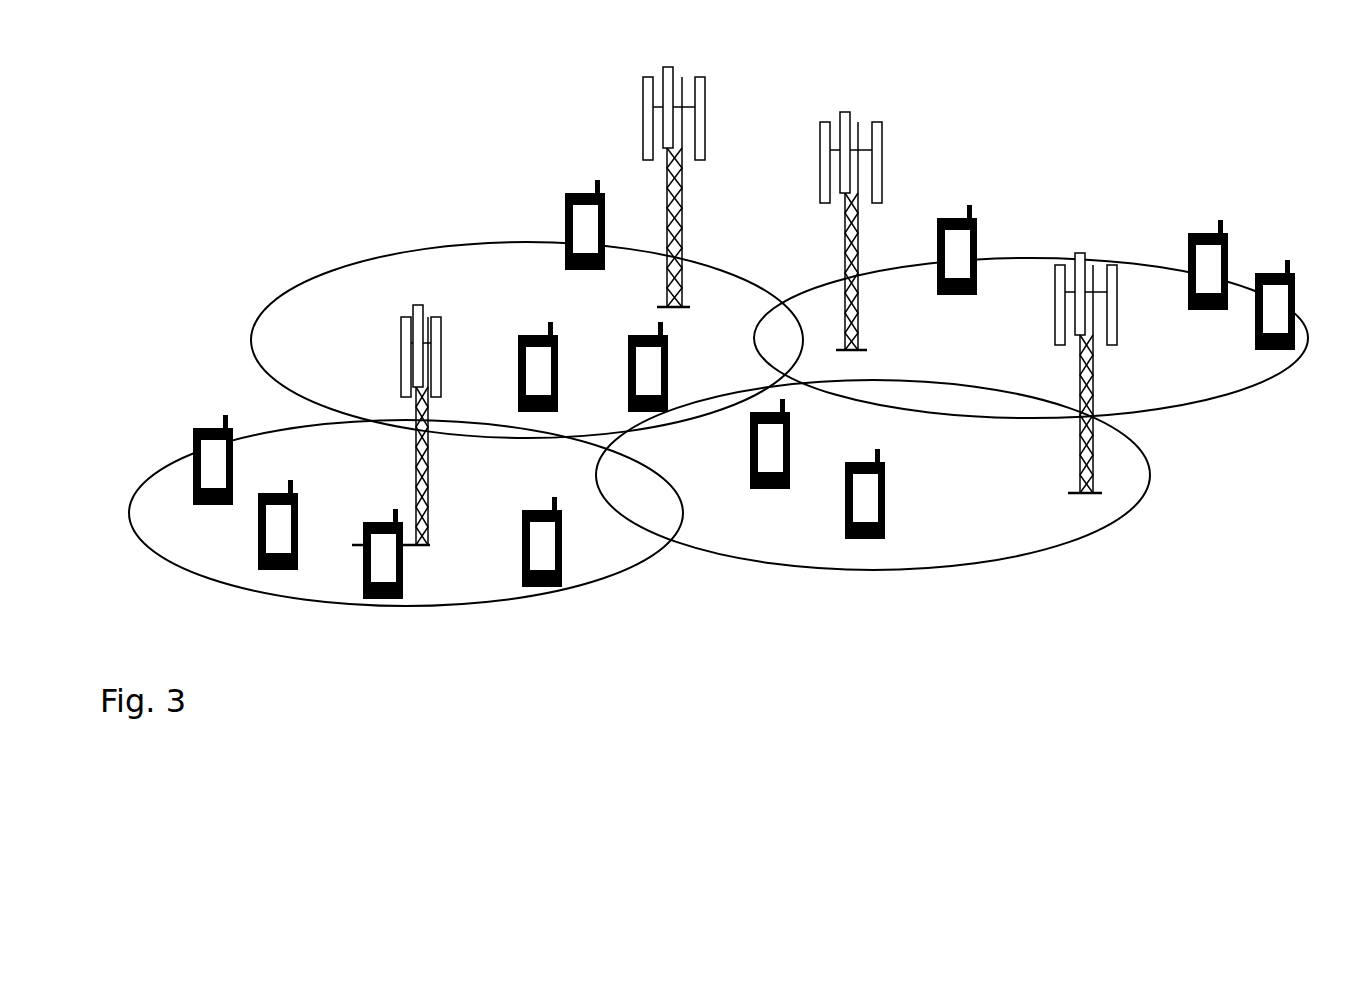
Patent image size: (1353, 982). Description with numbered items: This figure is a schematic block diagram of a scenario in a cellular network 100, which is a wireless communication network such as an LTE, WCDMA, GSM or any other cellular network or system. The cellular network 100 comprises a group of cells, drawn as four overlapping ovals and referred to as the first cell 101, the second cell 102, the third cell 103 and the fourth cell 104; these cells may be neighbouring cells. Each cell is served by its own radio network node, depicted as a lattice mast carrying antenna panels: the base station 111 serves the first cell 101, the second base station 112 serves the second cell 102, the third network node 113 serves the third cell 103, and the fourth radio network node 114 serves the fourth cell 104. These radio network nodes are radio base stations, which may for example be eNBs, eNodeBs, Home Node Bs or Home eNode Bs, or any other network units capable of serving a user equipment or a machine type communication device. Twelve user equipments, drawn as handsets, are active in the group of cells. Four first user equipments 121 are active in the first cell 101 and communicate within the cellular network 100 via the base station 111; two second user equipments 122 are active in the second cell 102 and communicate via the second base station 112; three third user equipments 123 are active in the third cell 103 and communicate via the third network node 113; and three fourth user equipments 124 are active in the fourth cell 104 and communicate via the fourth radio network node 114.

The cellular network 100 is at (993, 622).
The first cell 101 is at (277, 428).
The second cell 102 is at (1095, 530).
The third cell 103 is at (1012, 258).
The fourth cell 104 is at (290, 296).
The base station 111 is at (416, 425).
The second base station 112 is at (1067, 373).
The third network node 113 is at (837, 231).
The fourth radio network node 114 is at (692, 187).
The first user equipments 121 is at (193, 457).
The second user equipments 122 is at (750, 430).
The third user equipments 123 is at (937, 295).
The fourth user equipments 124 is at (565, 242).